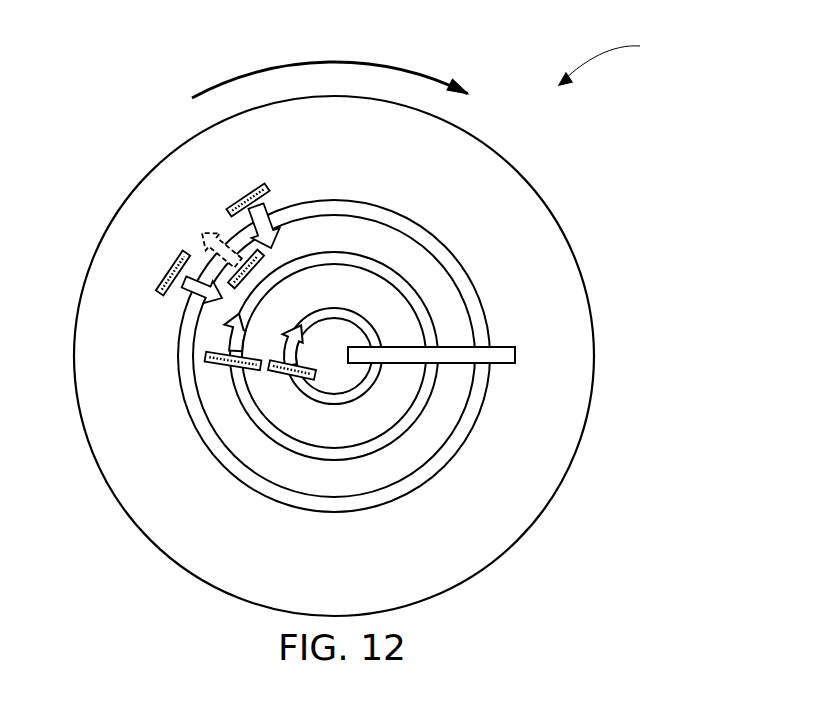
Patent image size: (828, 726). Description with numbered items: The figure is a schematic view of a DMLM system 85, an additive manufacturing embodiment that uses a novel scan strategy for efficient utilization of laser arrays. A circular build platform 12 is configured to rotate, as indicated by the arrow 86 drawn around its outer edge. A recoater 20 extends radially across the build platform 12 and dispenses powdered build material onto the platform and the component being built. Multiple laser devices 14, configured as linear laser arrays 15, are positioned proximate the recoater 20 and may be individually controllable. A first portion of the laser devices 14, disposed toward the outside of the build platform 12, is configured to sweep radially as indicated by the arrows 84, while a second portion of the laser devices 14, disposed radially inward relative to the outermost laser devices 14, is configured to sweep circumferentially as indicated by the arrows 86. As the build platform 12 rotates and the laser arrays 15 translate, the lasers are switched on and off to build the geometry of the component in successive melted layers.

The build platform 12 is at (128, 197).
The laser device 14 is at (210, 323).
The laser array 15 is at (168, 266).
The recoater 20 is at (498, 347).
The arrows 84 is at (282, 216).
The DMLM system 85 is at (619, 60).
The arrow 86 is at (420, 72).